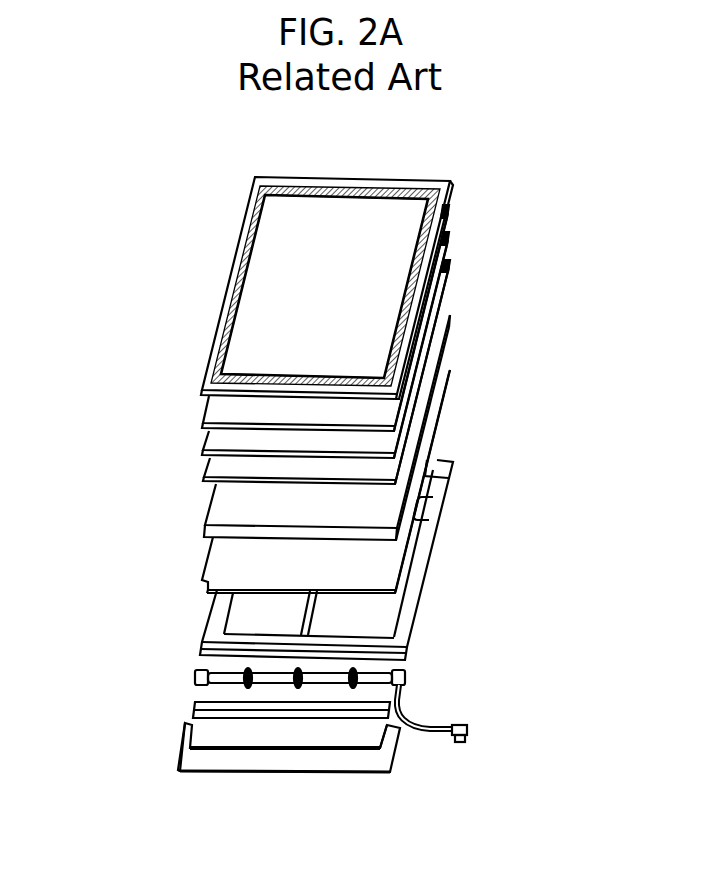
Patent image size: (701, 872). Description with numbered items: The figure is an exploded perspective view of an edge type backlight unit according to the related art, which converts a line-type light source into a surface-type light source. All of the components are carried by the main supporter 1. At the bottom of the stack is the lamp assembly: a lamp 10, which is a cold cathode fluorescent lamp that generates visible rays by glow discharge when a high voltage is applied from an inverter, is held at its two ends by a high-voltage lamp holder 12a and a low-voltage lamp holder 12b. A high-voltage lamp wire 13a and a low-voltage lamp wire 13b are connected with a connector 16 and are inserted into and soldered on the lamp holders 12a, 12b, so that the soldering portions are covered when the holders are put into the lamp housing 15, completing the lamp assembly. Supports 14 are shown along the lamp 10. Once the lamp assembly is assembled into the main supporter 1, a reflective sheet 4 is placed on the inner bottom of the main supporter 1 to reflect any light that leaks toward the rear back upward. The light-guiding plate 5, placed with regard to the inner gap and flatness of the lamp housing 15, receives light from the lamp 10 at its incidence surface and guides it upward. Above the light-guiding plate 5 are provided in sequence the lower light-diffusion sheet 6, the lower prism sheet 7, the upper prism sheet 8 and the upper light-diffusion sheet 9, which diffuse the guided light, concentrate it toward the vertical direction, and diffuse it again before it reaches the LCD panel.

The main supporter 1 is at (420, 590).
The reflective sheet 4 is at (218, 558).
The light-guiding plate 5 is at (218, 507).
The lower light-diffusion sheet 6 is at (210, 468).
The lower prism sheet 7 is at (212, 442).
The upper prism sheet 8 is at (212, 409).
The upper light-diffusion sheet 9 is at (243, 300).
The lamp 10 is at (228, 676).
The high-voltage lamp holder 12a is at (407, 676).
The low-voltage lamp holder 12b is at (195, 676).
The high-voltage lamp wire 13a is at (416, 723).
The low-voltage lamp wire 13b is at (220, 702).
The lamp supporting clips 14 is at (250, 676).
The lamp housing 15 is at (290, 708).
The connector 16 is at (459, 745).